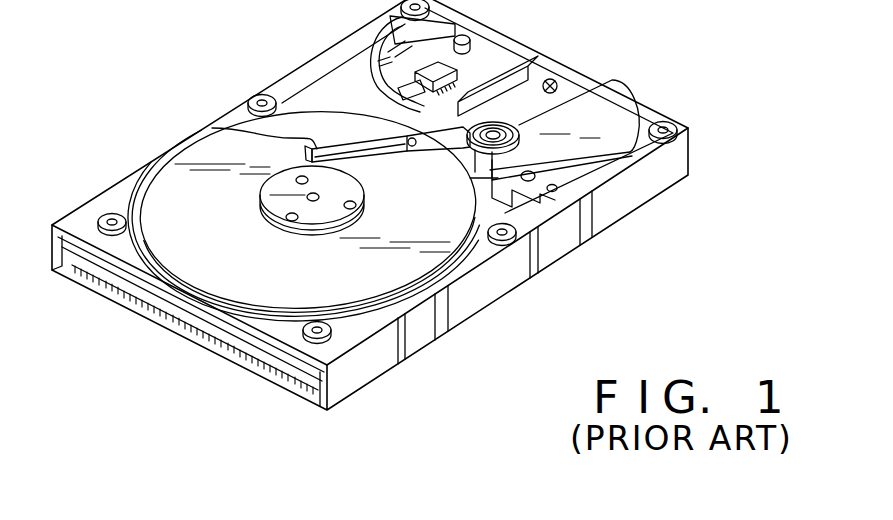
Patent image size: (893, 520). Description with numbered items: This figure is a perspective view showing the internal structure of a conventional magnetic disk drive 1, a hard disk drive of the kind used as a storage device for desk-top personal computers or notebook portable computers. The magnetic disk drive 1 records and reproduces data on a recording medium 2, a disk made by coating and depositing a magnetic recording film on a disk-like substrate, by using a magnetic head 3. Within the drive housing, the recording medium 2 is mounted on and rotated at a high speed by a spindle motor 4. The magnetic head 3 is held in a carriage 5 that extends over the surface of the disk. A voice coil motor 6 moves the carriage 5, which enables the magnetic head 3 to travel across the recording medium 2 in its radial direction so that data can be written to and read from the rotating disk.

The magnetic disk drive 1 is at (556, 293).
The recording medium 2 is at (235, 235).
The magnetic head 3 is at (213, 130).
The spindle motor 4 is at (318, 217).
The carriage 5 is at (332, 143).
The voice coil motor 6 is at (570, 125).